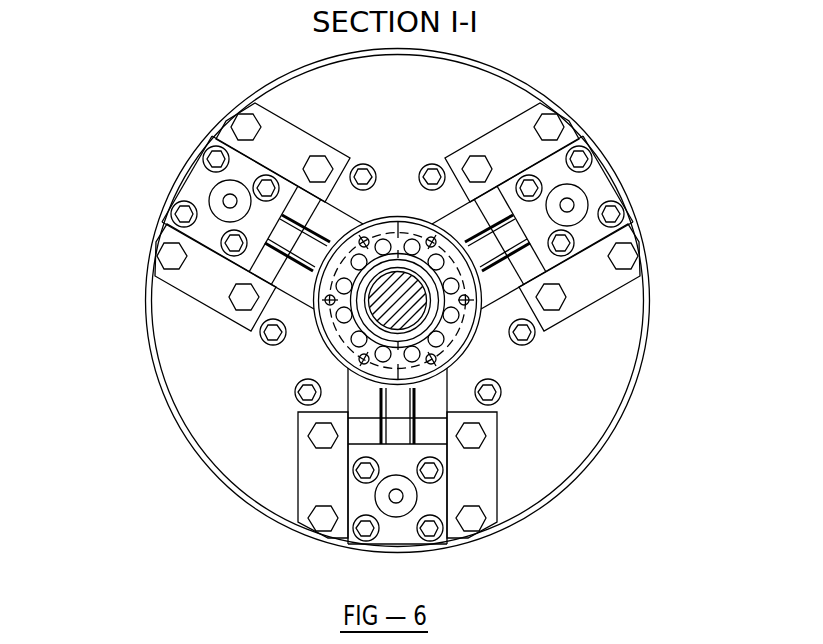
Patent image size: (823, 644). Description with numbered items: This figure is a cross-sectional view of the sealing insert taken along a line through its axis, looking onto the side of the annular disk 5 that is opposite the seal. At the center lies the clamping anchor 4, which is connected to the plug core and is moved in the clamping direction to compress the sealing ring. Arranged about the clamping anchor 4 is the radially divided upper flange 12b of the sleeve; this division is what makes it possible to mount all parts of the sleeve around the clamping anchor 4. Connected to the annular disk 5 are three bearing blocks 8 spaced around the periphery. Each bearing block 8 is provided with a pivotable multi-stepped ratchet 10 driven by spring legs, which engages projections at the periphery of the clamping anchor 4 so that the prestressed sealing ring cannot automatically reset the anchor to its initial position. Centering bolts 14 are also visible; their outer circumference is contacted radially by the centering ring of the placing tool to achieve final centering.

The clamping anchor 4 is at (387, 315).
The annular disk 5 is at (537, 458).
The bearing blocks 8 is at (433, 402).
The multi-stepped ratchets 10 is at (288, 238).
The upper flange 12b is at (470, 290).
The centering bolts 14 is at (233, 200).